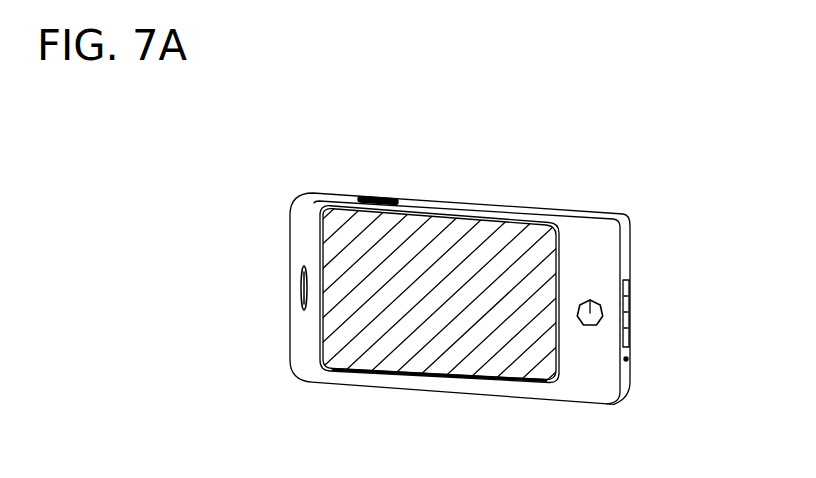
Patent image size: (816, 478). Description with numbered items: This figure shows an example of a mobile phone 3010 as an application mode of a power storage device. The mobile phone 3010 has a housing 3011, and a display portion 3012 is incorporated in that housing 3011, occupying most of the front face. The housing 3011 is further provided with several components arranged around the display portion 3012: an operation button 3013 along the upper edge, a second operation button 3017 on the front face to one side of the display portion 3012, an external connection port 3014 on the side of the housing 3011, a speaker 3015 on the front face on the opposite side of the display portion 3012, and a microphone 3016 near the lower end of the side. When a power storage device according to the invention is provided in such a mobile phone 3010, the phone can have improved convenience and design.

The mobile phone 3010 is at (573, 170).
The housing 3011 is at (585, 385).
The display portion 3012 is at (340, 256).
The operation button 3013 is at (395, 199).
The external connection port 3014 is at (632, 308).
The speaker 3015 is at (304, 298).
The microphone 3016 is at (627, 361).
The operation button 3017 is at (593, 300).